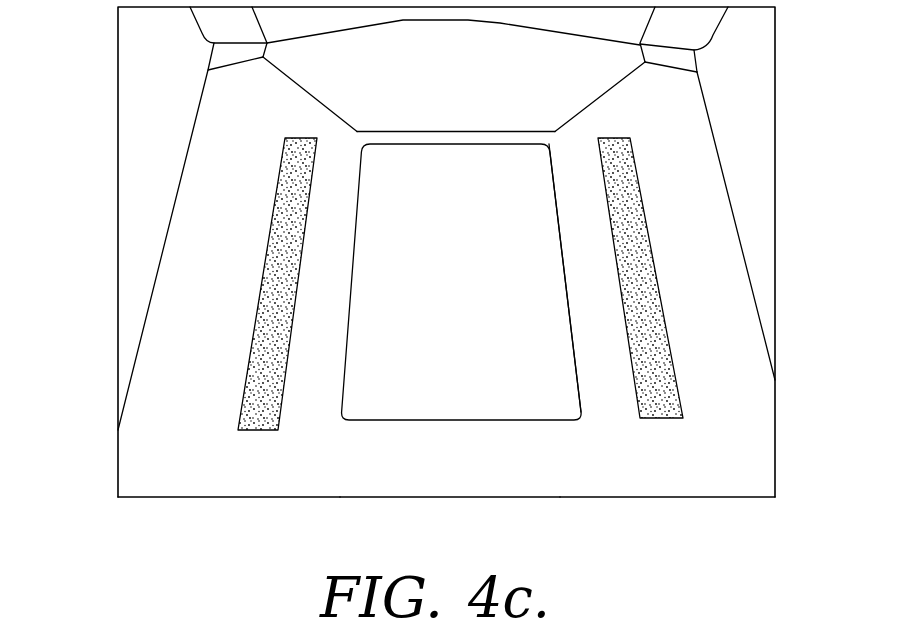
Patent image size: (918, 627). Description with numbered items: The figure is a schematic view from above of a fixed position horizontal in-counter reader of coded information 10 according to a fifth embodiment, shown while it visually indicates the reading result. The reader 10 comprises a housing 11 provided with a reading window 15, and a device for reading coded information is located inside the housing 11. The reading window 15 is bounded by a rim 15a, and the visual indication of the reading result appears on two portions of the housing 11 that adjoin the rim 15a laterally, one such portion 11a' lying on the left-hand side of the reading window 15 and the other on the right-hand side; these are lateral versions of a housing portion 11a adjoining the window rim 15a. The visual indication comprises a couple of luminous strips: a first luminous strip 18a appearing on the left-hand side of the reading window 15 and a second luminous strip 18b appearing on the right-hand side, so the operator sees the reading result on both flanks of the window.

The fixed position reader of coded information 10 is at (740, 89).
The housing 11 is at (188, 307).
The portion of the housing 11a is at (450, 499).
The left portion of the housing 11a' is at (229, 451).
The reading window 15 is at (478, 290).
The rim of the reading window 15a is at (556, 197).
The first luminous strip 18a is at (267, 405).
The second luminous strip 18b is at (650, 323).